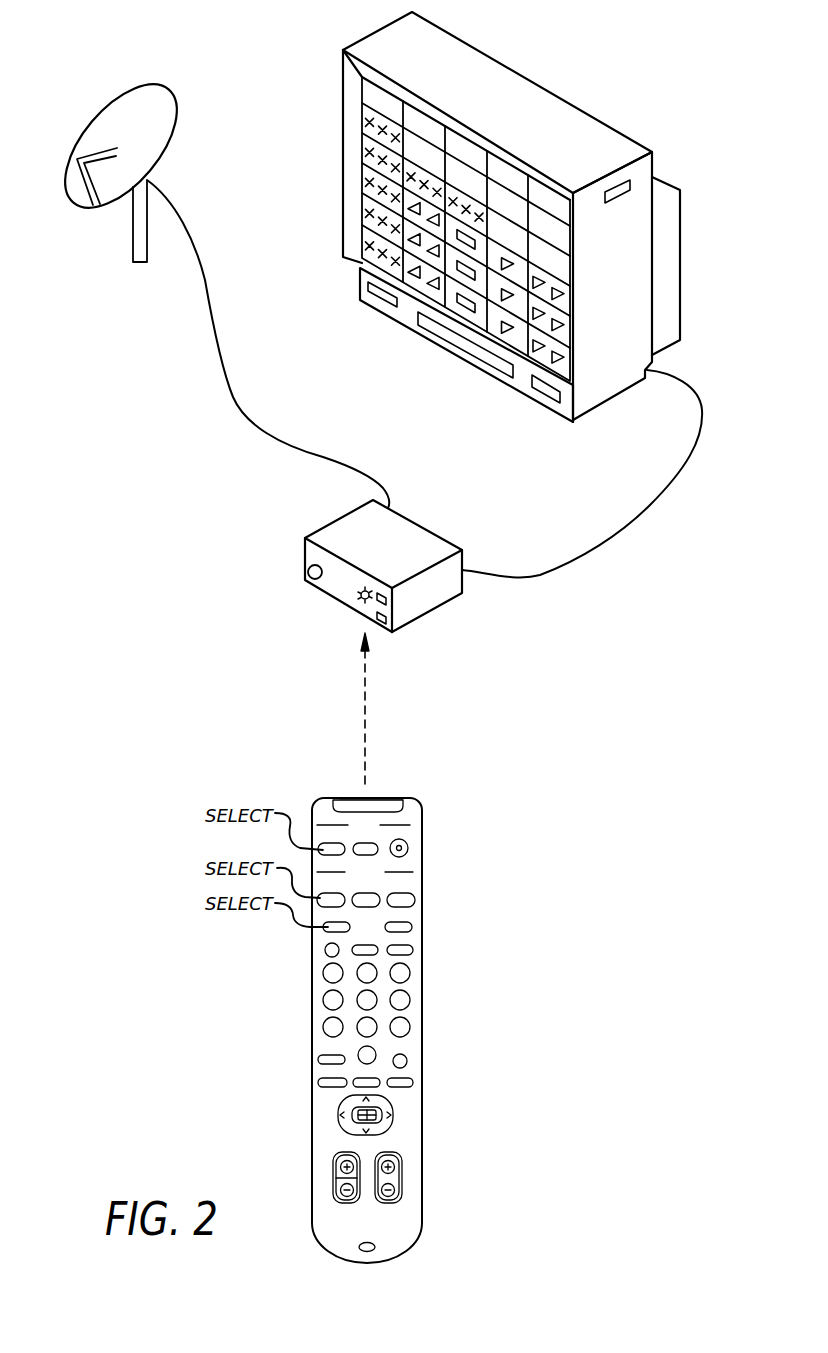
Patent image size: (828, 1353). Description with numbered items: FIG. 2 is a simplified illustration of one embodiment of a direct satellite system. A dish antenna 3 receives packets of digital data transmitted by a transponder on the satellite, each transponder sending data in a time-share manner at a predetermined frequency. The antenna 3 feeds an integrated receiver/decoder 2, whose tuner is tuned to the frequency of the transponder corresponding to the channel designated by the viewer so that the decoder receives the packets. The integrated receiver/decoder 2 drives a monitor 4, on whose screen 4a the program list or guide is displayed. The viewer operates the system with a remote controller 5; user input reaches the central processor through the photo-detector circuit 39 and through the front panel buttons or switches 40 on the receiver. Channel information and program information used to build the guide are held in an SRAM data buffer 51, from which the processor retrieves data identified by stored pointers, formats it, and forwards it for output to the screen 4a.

The set-top box receiver 2 is at (435, 534).
The satellite dish antenna 3 is at (93, 122).
The television 4 is at (538, 80).
The television display screen 4a is at (372, 91).
The remote control 5 is at (312, 1007).
The photo-detector circuit 39 is at (384, 620).
The front panel buttons or switches 40 is at (358, 590).
The SRAM data buffer 51 is at (408, 797).